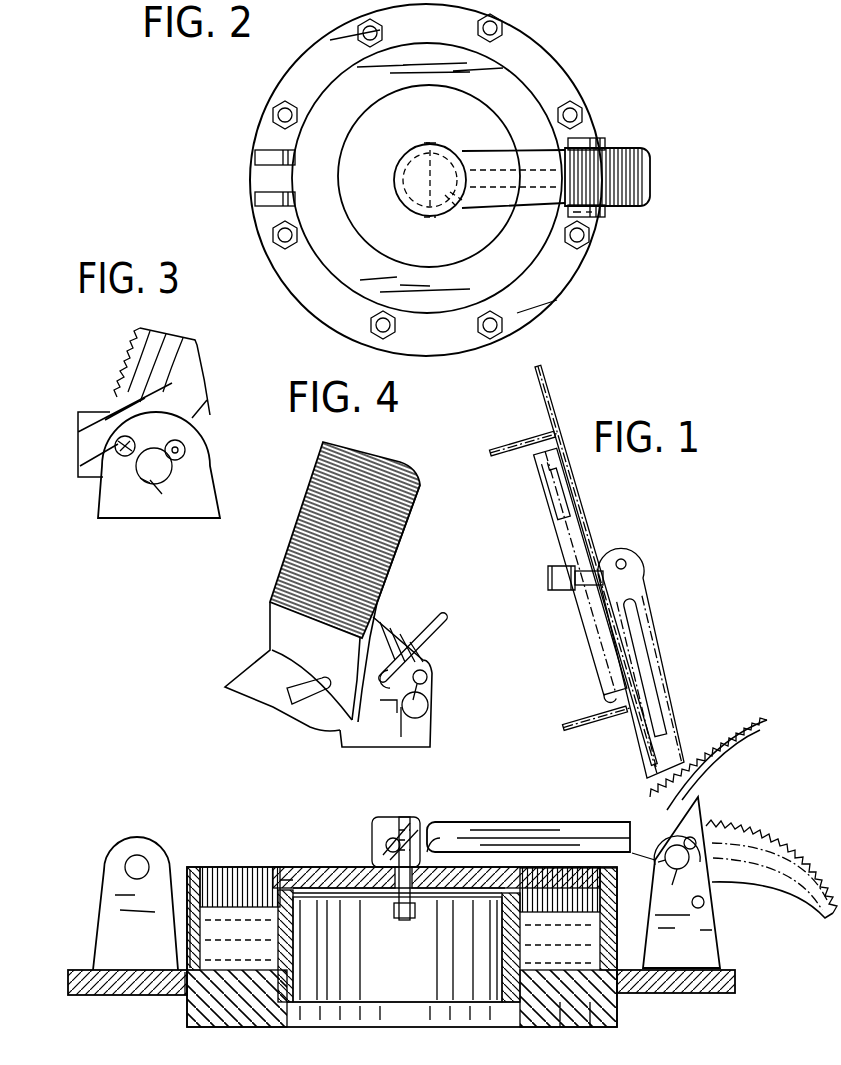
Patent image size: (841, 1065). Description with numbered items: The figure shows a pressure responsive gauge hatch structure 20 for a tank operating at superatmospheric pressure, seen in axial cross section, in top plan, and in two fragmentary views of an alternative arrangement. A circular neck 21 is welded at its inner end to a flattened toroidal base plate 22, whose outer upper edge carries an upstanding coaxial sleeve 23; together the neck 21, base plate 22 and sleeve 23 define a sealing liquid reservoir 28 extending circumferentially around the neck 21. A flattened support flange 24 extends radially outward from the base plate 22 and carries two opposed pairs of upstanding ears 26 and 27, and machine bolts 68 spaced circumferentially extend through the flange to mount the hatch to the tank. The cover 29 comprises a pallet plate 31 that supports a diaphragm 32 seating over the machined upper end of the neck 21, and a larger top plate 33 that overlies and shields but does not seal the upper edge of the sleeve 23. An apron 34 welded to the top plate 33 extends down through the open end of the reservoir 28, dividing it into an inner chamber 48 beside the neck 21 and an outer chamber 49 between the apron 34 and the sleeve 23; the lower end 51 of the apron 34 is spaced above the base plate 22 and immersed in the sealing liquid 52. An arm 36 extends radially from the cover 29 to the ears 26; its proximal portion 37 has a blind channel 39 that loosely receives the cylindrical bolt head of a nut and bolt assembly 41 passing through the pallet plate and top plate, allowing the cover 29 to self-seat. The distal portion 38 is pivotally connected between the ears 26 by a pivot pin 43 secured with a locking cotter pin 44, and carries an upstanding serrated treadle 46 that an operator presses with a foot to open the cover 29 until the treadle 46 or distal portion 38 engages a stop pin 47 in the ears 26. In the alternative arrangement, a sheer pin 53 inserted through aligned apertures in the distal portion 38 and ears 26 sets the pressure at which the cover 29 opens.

In FIG. 1, the gauge hatch structure 20 is at (278, 808).
In FIG. 1, the neck 21 is at (310, 1005).
In FIG. 1, the base plate 22 is at (220, 1010).
In FIG. 1, the sleeve 23 is at (192, 868).
In FIG. 2, the support flange 24 is at (558, 57).
In FIG. 1, the support flange 24 is at (710, 985).
In FIG. 2, the ears 26 is at (600, 143).
In FIG. 3, the ears 26 is at (100, 500).
In FIG. 4, the ears 26 is at (342, 745).
In FIG. 1, the ears 26 is at (718, 945).
In FIG. 2, the ears 27 is at (272, 152).
In FIG. 1, the ears 27 is at (105, 888).
In FIG. 1, the sealing liquid reservoir 28 is at (187, 995).
In FIG. 1, the cover 29 is at (350, 825).
In FIG. 1, the pallet plate 31 is at (374, 850).
In FIG. 1, the diaphragm 32 is at (312, 868).
In FIG. 2, the top plate 33 is at (405, 228).
In FIG. 1, the top plate 33 is at (286, 890).
In FIG. 1, the apron 34 is at (250, 875).
In FIG. 2, the arm 36 is at (520, 162).
In FIG. 3, the arm 36 is at (80, 410).
In FIG. 4, the arm 36 is at (240, 700).
In FIG. 1, the arm 36 is at (515, 822).
In FIG. 2, the proximal portion 37 is at (396, 175).
In FIG. 1, the proximal portion 37 is at (398, 817).
In FIG. 1, the distal portion 38 is at (714, 797).
In FIG. 2, the blind channel 39 is at (455, 200).
In FIG. 1, the blind channel 39 is at (430, 828).
In FIG. 1, the nut and bolt assembly 41 is at (405, 922).
In FIG. 2, the pivot pin 43 is at (428, 142).
In FIG. 3, the pivot pin 43 is at (175, 470).
In FIG. 4, the pivot pin 43 is at (428, 710).
In FIG. 1, the pivot pin 43 is at (690, 866).
In FIG. 2, the locking cotter pin 44 is at (590, 218).
In FIG. 3, the locking cotter pin 44 is at (186, 451).
In FIG. 4, the locking cotter pin 44 is at (428, 675).
In FIG. 1, the locking cotter pin 44 is at (697, 838).
In FIG. 2, the serrated treadle 46 is at (652, 170).
In FIG. 3, the serrated treadle 46 is at (188, 356).
In FIG. 4, the serrated treadle 46 is at (372, 462).
In FIG. 1, the serrated treadle 46 is at (722, 718).
In FIG. 1, the stop pin 47 is at (705, 905).
In FIG. 1, the inner chamber 48 is at (515, 1006).
In FIG. 1, the outer chamber 49 is at (617, 990).
In FIG. 1, the lower end 51 is at (590, 1027).
In FIG. 1, the sealing liquid 52 is at (138, 855).
In FIG. 3, the sheer pin 53 is at (115, 447).
In FIG. 4, the sheer pin 53 is at (447, 618).
In FIG. 2, the machine bolts 68 is at (497, 30).